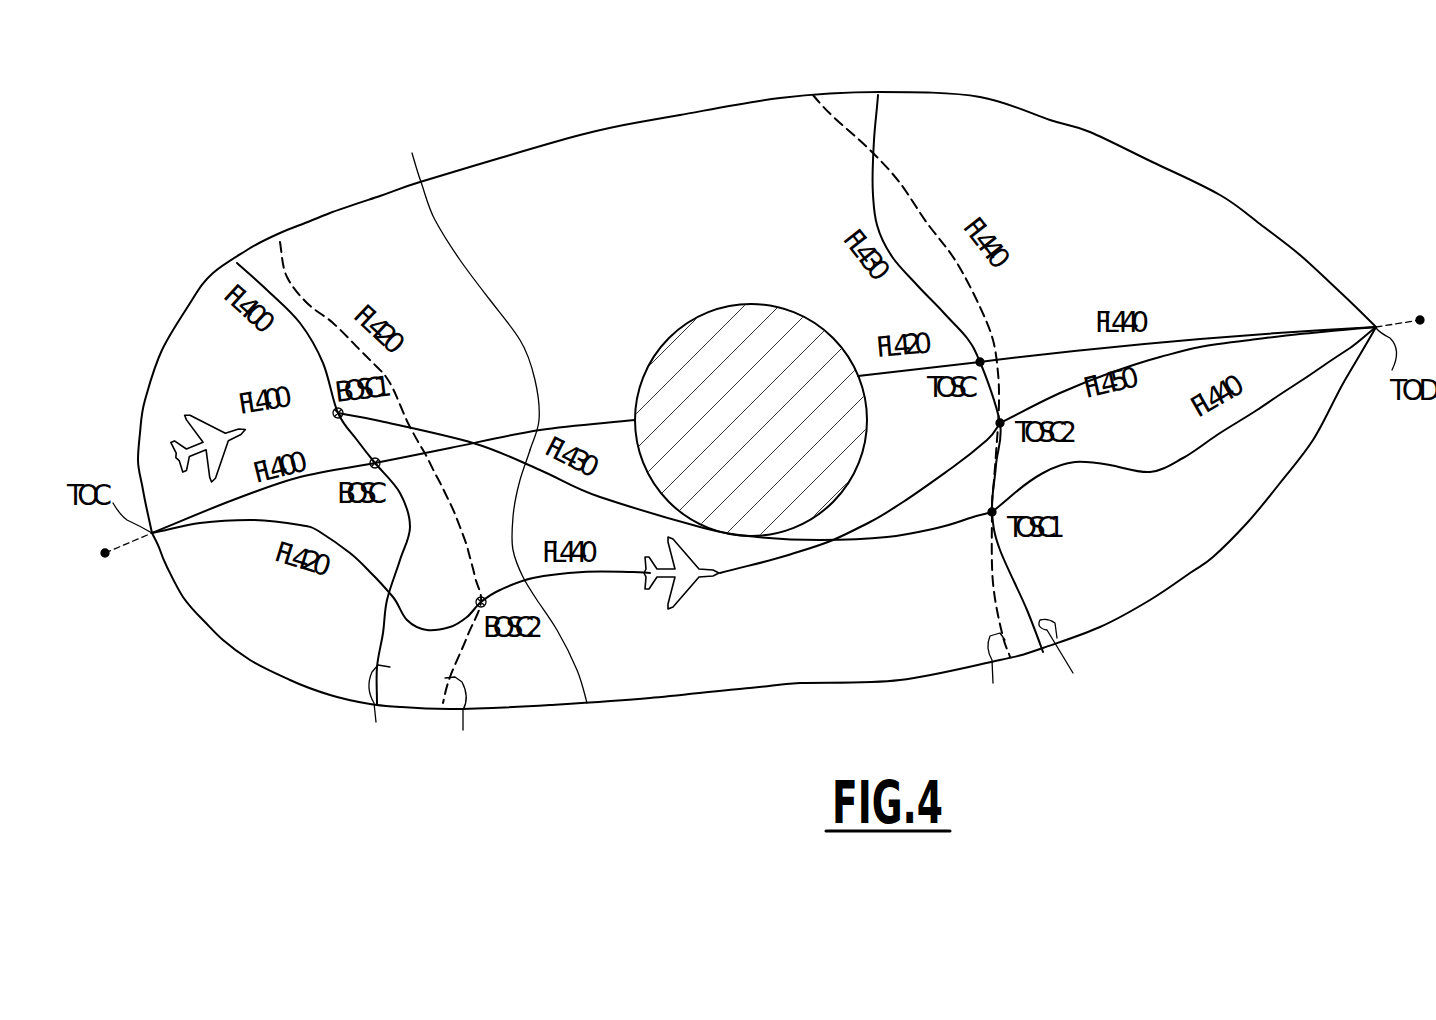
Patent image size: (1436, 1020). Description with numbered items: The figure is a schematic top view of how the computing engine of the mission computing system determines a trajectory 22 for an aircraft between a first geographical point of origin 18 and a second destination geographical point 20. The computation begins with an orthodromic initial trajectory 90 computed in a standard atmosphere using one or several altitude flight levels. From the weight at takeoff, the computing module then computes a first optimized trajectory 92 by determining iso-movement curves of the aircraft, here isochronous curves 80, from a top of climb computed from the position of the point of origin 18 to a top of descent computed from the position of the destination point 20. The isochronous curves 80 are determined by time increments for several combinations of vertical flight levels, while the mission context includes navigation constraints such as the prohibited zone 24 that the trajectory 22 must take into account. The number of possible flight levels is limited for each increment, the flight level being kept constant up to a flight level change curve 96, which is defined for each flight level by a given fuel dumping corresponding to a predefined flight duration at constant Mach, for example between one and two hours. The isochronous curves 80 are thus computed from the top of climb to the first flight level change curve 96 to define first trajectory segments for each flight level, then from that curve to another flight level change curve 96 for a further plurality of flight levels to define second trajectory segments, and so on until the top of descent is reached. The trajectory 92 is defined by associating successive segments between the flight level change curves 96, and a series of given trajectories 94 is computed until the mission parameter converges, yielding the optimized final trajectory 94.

The geographical point of origin 18 is at (105, 557).
The destination geographical point 20 is at (1420, 316).
The trajectory 22 is at (747, 585).
The prohibited zone 24 is at (733, 345).
The isochronous curve 80 is at (275, 286).
The orthodromic initial trajectory 90 is at (465, 285).
The first optimized trajectory 92 is at (586, 704).
The optimized final trajectory 94 is at (360, 563).
The flight level change curve 96 is at (727, 692).